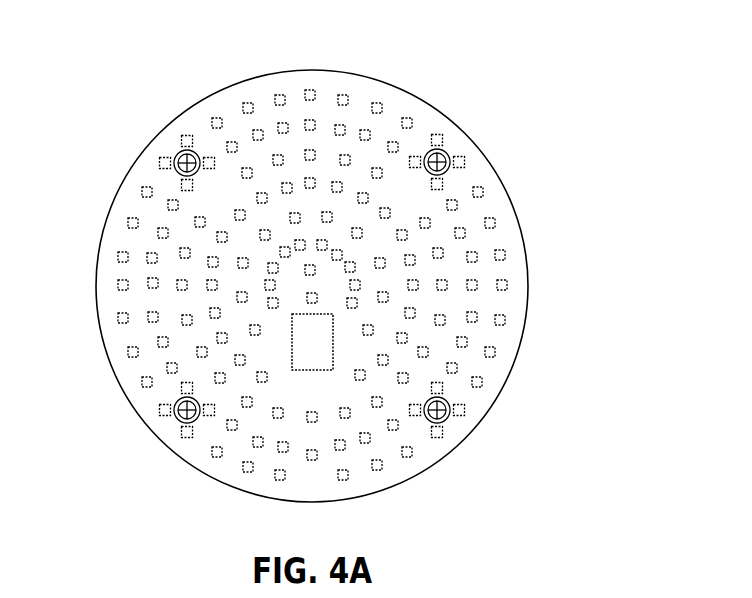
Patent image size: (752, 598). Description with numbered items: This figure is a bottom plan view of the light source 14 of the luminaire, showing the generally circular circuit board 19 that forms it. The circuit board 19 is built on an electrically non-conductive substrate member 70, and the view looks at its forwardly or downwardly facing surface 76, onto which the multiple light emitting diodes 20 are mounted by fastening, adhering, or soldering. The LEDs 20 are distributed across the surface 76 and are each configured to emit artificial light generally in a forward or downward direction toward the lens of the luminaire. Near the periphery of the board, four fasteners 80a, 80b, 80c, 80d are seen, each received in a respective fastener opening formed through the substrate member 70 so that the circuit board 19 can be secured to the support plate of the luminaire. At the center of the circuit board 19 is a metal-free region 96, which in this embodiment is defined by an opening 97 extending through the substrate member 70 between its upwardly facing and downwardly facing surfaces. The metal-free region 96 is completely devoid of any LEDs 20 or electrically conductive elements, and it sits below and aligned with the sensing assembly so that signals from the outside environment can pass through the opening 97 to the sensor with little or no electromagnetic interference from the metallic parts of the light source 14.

The light source 14 is at (472, 52).
The circuit board 19 is at (528, 262).
The light emitting diodes 20 is at (317, 147).
The electrically non-conductive substrate member 70 is at (478, 212).
The downwardly facing surface 76 is at (130, 242).
The fastener 80a is at (174, 153).
The fastener 80b is at (446, 155).
The fastener 80c is at (446, 415).
The fastener 80d is at (178, 418).
The metal-free region 96 is at (293, 375).
The opening 97 is at (318, 345).